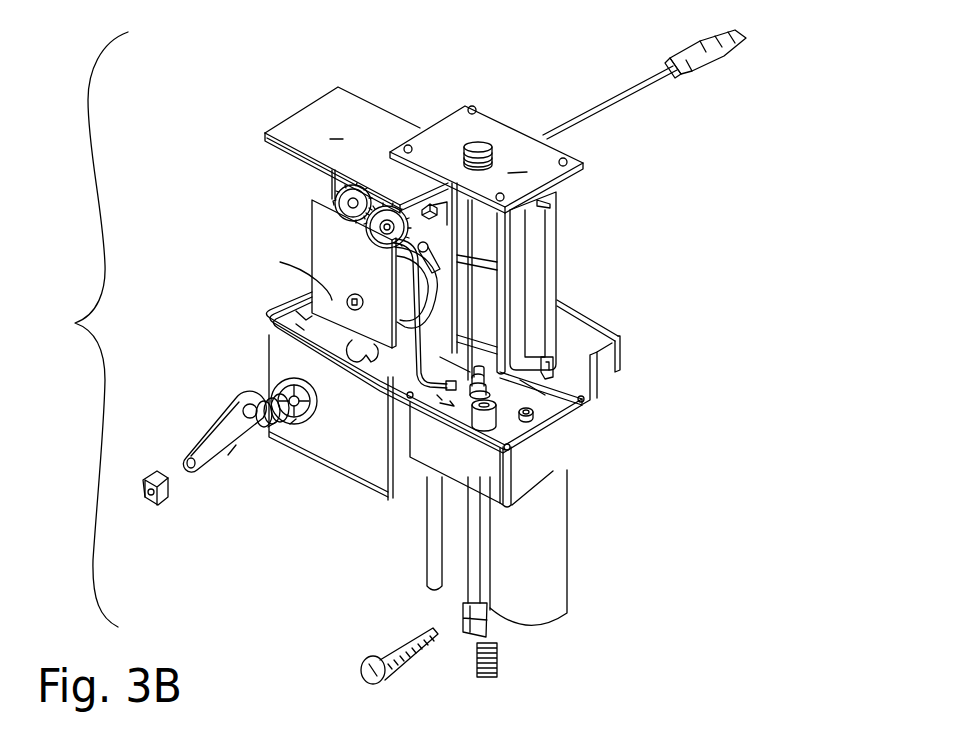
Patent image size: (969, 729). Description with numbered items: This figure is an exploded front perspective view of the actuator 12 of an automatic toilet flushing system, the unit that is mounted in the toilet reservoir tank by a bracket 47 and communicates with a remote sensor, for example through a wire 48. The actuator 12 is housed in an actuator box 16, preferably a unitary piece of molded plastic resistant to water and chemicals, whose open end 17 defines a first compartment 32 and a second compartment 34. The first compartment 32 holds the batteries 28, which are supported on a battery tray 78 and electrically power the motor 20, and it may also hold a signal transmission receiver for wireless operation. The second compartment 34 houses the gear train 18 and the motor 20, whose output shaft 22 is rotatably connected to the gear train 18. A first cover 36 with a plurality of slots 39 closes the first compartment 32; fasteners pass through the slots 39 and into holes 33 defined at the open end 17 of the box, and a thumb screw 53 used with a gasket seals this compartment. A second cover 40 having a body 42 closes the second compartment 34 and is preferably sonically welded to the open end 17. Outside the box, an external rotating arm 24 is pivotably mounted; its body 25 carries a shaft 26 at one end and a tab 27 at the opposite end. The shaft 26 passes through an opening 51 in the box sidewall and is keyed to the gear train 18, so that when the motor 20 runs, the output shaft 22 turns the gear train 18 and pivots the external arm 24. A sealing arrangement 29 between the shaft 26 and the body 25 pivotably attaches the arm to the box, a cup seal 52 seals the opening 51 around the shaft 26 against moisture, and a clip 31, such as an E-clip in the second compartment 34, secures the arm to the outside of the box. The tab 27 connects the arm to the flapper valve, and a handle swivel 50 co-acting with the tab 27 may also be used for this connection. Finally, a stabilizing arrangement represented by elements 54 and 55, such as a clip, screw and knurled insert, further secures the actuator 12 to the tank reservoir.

The actuator 12 is at (81, 329).
The actuator box 16 is at (273, 310).
The open end 17 is at (280, 310).
The gear train 18 is at (330, 184).
The motor 20 is at (410, 365).
The output shaft 22 is at (352, 311).
The external rotating arm 24 is at (200, 438).
The body 25 is at (232, 463).
The shaft 26 is at (297, 443).
The tab 27 is at (192, 468).
The battery 28 is at (520, 227).
The sealing arrangement 29 is at (273, 443).
The clip 31 is at (353, 345).
The first compartment 32 is at (425, 448).
The holes 33 is at (521, 395).
The second compartment 34 is at (302, 315).
The first cover 36 is at (475, 104).
The slots 39 is at (410, 143).
The second cover 40 is at (292, 116).
The body 42 is at (336, 125).
The bracket 47 is at (627, 353).
The wire 48 is at (596, 108).
The handle swivel 50 is at (143, 493).
The opening 51 is at (270, 372).
The cup seal 52 is at (263, 397).
The thumb screw 53 is at (488, 142).
The stabilizing arrangement element 54 is at (360, 668).
The stabilizing arrangement element 55 is at (493, 643).
The battery tray 78 is at (555, 290).